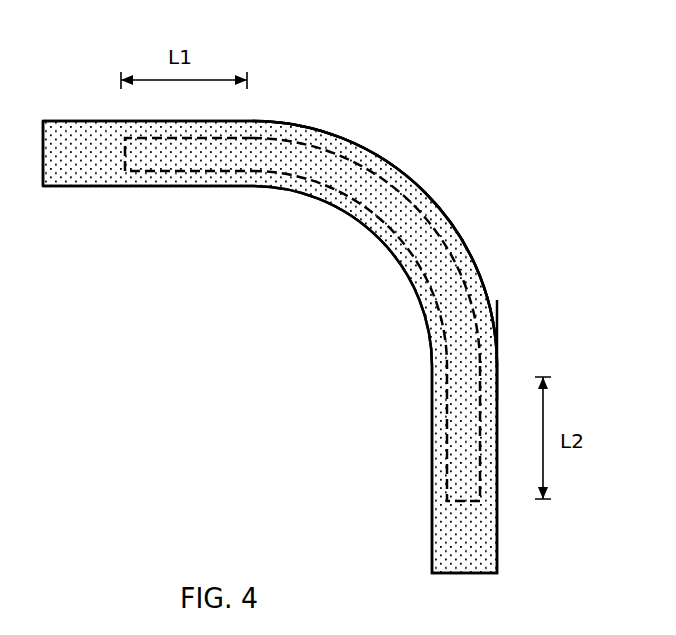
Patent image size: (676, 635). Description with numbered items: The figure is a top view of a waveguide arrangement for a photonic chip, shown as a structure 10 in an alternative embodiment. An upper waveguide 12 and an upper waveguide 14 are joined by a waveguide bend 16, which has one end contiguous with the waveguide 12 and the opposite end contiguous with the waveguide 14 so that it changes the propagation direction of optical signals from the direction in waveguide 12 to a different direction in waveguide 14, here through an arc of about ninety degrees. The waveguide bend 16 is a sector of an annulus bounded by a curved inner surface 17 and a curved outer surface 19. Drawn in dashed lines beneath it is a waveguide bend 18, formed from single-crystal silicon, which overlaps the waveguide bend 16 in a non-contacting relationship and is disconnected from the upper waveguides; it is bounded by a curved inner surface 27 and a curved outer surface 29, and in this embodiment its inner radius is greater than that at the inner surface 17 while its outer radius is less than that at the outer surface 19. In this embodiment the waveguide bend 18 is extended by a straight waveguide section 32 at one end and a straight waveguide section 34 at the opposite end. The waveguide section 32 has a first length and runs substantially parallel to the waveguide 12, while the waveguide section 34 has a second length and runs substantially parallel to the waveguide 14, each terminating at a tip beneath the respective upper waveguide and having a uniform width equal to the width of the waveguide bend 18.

The structure 10 is at (531, 160).
The waveguide 12 is at (78, 182).
The waveguide 14 is at (471, 530).
The waveguide bend 16 is at (458, 245).
The curved inner surface 17 is at (432, 302).
The waveguide bend 18 is at (484, 314).
The curved outer surface 19 is at (402, 197).
The curved inner surface 27 is at (287, 190).
The curved outer surface 29 is at (370, 150).
The waveguide section 32 is at (195, 172).
The waveguide section 34 is at (449, 457).